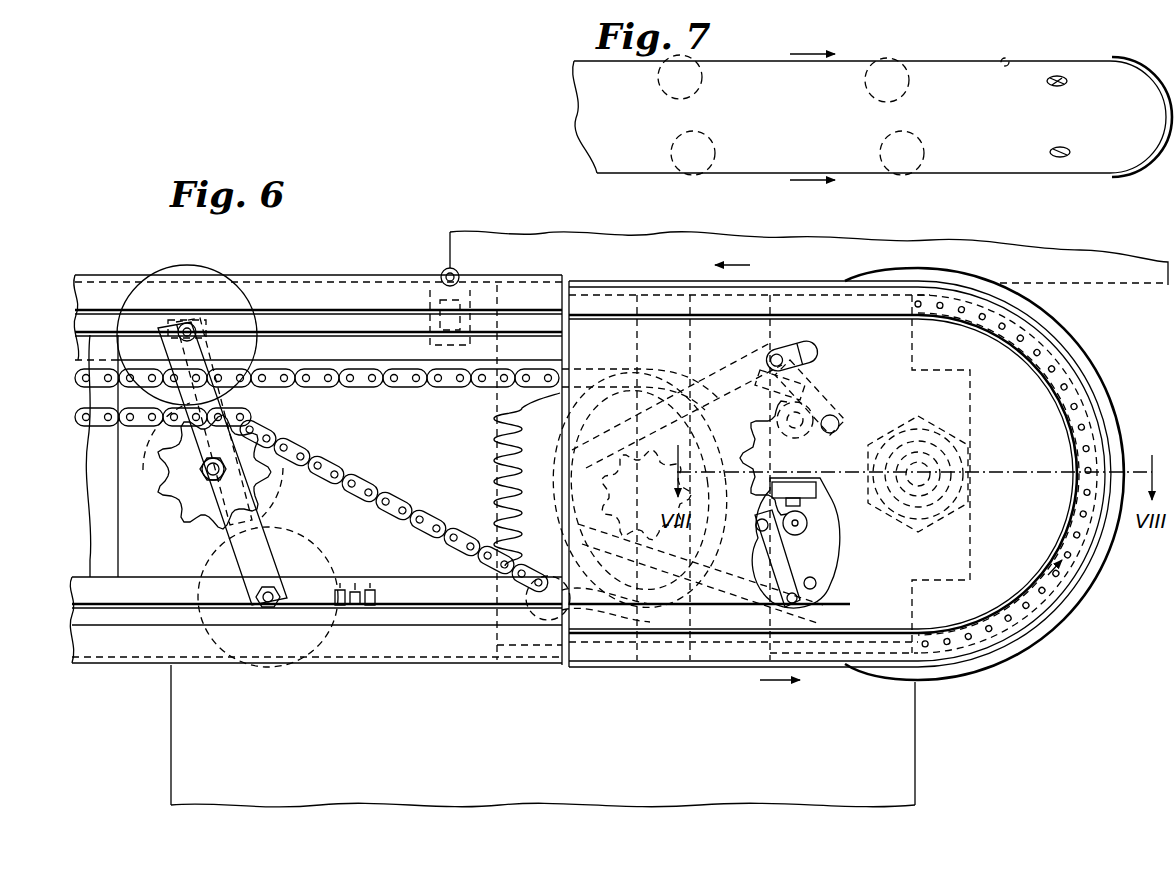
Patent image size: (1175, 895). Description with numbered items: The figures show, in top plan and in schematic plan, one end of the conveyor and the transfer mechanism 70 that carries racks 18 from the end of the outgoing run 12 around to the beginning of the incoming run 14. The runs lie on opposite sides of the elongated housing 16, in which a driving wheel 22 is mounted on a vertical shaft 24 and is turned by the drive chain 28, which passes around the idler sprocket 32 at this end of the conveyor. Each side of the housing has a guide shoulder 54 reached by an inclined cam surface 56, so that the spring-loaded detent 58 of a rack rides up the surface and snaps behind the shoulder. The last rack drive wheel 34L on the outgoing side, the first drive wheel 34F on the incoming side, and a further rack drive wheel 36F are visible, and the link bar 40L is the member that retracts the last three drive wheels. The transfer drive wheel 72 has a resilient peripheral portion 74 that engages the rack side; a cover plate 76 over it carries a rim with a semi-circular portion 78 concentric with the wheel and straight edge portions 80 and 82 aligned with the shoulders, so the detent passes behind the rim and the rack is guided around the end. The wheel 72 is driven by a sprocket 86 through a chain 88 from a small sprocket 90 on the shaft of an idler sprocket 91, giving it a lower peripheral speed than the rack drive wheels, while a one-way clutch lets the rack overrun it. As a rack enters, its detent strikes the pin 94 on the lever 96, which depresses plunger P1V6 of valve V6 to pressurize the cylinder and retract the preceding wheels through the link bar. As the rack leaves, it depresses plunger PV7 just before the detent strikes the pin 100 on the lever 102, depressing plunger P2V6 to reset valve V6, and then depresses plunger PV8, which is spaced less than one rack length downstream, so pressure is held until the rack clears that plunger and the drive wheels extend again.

In FIG. 7, the outgoing run 12 is at (975, 177).
In FIG. 6, the outgoing run 12 is at (417, 668).
In FIG. 7, the incoming run 14 is at (600, 58).
In FIG. 6, the incoming run 14 is at (345, 270).
In FIG. 6, the housing 16 is at (400, 345).
In FIG. 6, the rack 18 is at (580, 237).
In FIG. 6, the driving wheel 22 is at (278, 503).
In FIG. 6, the vertical shaft 24 is at (200, 470).
In FIG. 6, the drive chain 28 is at (460, 390).
In FIG. 6, the idler sprocket 32 is at (577, 400).
In FIG. 7, the first drive wheel on incoming run 34F is at (882, 61).
In FIG. 7, the last rack drive wheel 34L is at (896, 168).
In FIG. 6, the last rack drive wheel 34L is at (328, 566).
In FIG. 6, the rack drive wheel 36F is at (190, 268).
In FIG. 6, the link bar 40L is at (182, 592).
In FIG. 6, the guide shoulder 54 is at (400, 622).
In FIG. 6, the inclined cam surface 56 is at (340, 635).
In FIG. 6, the spring-loaded detent 58 is at (492, 614).
In FIG. 7, the transfer mechanism 70 is at (1158, 155).
In FIG. 6, the drive wheel 72 is at (1110, 432).
In FIG. 6, the resilient peripheral portion 74 is at (1022, 645).
In FIG. 6, the cover plate 76 is at (1030, 568).
In FIG. 6, the semi-circular portion 78 is at (935, 676).
In FIG. 6, the straight edge portion 80 is at (744, 692).
In FIG. 6, the straight edge portion 82 is at (680, 272).
In FIG. 6, the sprocket 86 is at (745, 420).
In FIG. 6, the chain 88 is at (697, 477).
In FIG. 6, the small sprocket 90 is at (646, 481).
In FIG. 6, the idler sprocket 91 is at (496, 481).
In FIG. 7, the pin 94 is at (1060, 158).
In FIG. 6, the pin 94 is at (795, 610).
In FIG. 6, the lever 96 is at (815, 572).
In FIG. 7, the pin 100 is at (1058, 76).
In FIG. 6, the pin 100 is at (790, 342).
In FIG. 6, the lever 102 is at (825, 390).
In FIG. 7, the operating plunger of valve V7 PV7 is at (963, 61).
In FIG. 6, the operating plunger of valve V7 PV7 is at (446, 268).
In FIG. 7, the operating plunger of valve V8 PV8 is at (748, 61).
In FIG. 6, the plunger of valve V6 P2V6 is at (841, 418).
In FIG. 6, the plunger of valve V6 P1V6 is at (810, 530).
In FIG. 6, the valve V6 is at (820, 500).